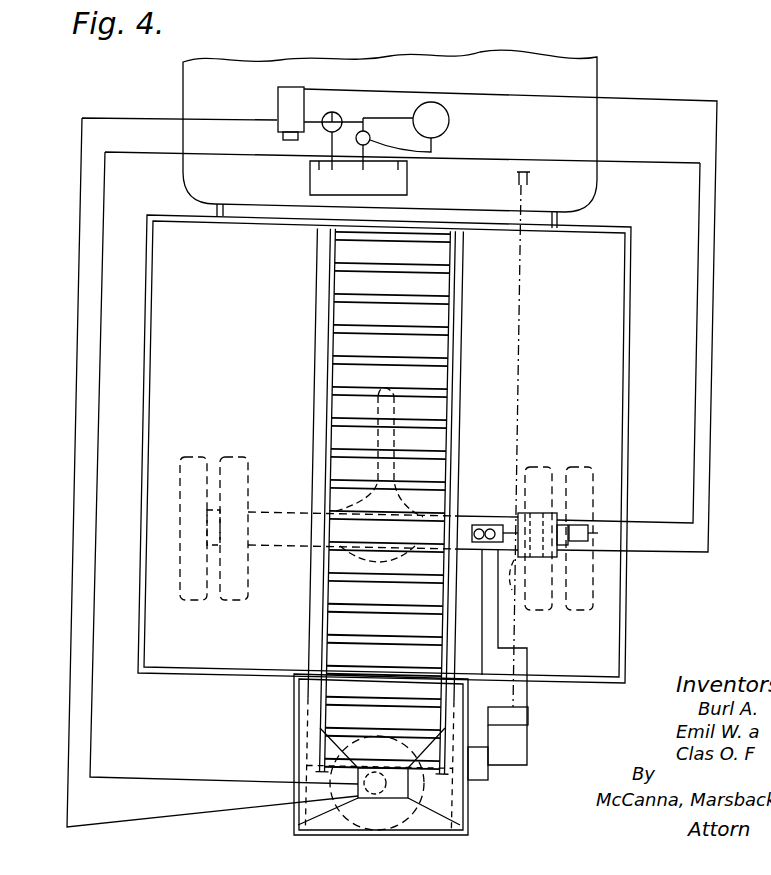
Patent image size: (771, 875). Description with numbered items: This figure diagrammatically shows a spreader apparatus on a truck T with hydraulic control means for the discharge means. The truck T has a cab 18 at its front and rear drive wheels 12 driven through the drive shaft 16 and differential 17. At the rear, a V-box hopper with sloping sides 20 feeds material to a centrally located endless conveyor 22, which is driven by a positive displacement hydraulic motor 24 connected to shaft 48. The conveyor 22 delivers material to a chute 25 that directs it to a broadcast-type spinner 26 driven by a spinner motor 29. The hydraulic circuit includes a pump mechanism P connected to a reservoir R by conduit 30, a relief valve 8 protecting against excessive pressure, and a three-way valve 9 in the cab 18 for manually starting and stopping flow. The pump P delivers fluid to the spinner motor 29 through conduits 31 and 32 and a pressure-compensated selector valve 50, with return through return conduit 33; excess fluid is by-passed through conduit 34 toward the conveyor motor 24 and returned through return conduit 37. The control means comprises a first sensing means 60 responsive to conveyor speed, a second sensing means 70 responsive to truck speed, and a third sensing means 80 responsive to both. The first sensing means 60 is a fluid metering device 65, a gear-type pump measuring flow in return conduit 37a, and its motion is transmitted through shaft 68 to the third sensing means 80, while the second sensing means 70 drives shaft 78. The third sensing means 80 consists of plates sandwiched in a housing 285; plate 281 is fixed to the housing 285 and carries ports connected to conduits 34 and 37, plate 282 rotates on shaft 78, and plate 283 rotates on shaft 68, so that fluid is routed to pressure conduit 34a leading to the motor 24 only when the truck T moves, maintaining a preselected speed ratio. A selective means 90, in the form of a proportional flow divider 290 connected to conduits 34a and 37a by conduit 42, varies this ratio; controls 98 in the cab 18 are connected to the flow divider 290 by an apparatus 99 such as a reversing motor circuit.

The truck T is at (610, 76).
The cab 18 is at (183, 88).
The selector valve 50 is at (298, 112).
The three-way valve 9 is at (337, 112).
The conduit 31 is at (319, 120).
The pump mechanism P is at (437, 129).
The relief valve 8 is at (356, 140).
The conduit 30 is at (374, 150).
The reservoir R is at (358, 191).
The controls 98 is at (534, 178).
The apparatus 99 is at (522, 320).
The conduit 32 is at (82, 262).
The conduit 34 is at (717, 228).
The return conduit 33 is at (105, 280).
The return conduit 37 is at (700, 252).
The sides 20 is at (226, 279).
The conveyor 22 is at (318, 333).
The drive shaft 16 is at (396, 413).
The differential 17 is at (402, 553).
The rear drive wheels 12 is at (194, 601).
The third sensing means 80 is at (538, 513).
The first sensing means 60 is at (477, 545).
The fluid metering device 65 is at (490, 528).
The shaft 68 is at (518, 520).
The housing 285 is at (521, 513).
The plate 283 is at (527, 575).
The plate 282 is at (578, 585).
The plate 281 is at (585, 565).
The shaft 78 is at (563, 523).
The second sensing means 70 is at (598, 534).
The return conduit 37a is at (482, 608).
The pressure conduit 34a is at (527, 657).
The proportional flow divider 290 is at (522, 724).
The conduit 42 is at (485, 709).
The selective means 90 is at (534, 714).
The hydraulic motor 24 is at (485, 782).
The chute 25 is at (293, 718).
The spinner 26 is at (466, 815).
The spinner motor 29 is at (358, 798).
The shaft 48 is at (440, 802).